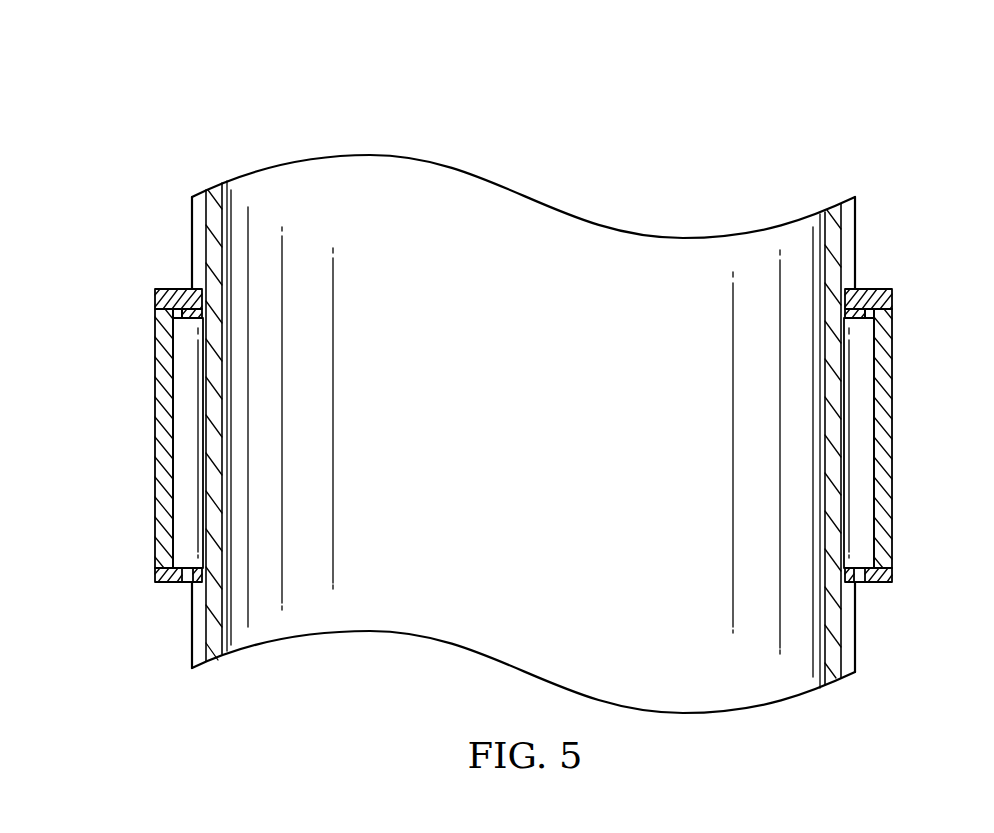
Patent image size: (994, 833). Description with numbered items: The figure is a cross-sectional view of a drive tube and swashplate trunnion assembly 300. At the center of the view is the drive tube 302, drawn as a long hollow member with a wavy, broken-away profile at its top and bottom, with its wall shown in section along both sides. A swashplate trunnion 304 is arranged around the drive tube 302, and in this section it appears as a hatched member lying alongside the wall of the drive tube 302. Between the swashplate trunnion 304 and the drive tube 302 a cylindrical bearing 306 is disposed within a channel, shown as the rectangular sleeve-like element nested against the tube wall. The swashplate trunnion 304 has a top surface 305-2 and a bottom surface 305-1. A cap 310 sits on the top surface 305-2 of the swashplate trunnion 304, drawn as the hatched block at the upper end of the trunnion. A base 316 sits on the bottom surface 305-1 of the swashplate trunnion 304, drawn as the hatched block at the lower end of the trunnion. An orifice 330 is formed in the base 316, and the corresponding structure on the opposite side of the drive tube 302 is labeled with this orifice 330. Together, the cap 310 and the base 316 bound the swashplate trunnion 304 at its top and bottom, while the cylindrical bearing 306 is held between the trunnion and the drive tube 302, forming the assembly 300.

The drive tube and swashplate trunnion assembly 300 is at (277, 78).
The drive tube 302 is at (192, 640).
The swashplate trunnion 304 is at (155, 398).
The bottom surface 305-1 is at (158, 604).
The top surface 305-2 is at (140, 313).
The cylindrical bearing 306 is at (190, 488).
The cap 310 is at (172, 287).
The base 316 is at (155, 568).
The orifice 330 is at (866, 585).